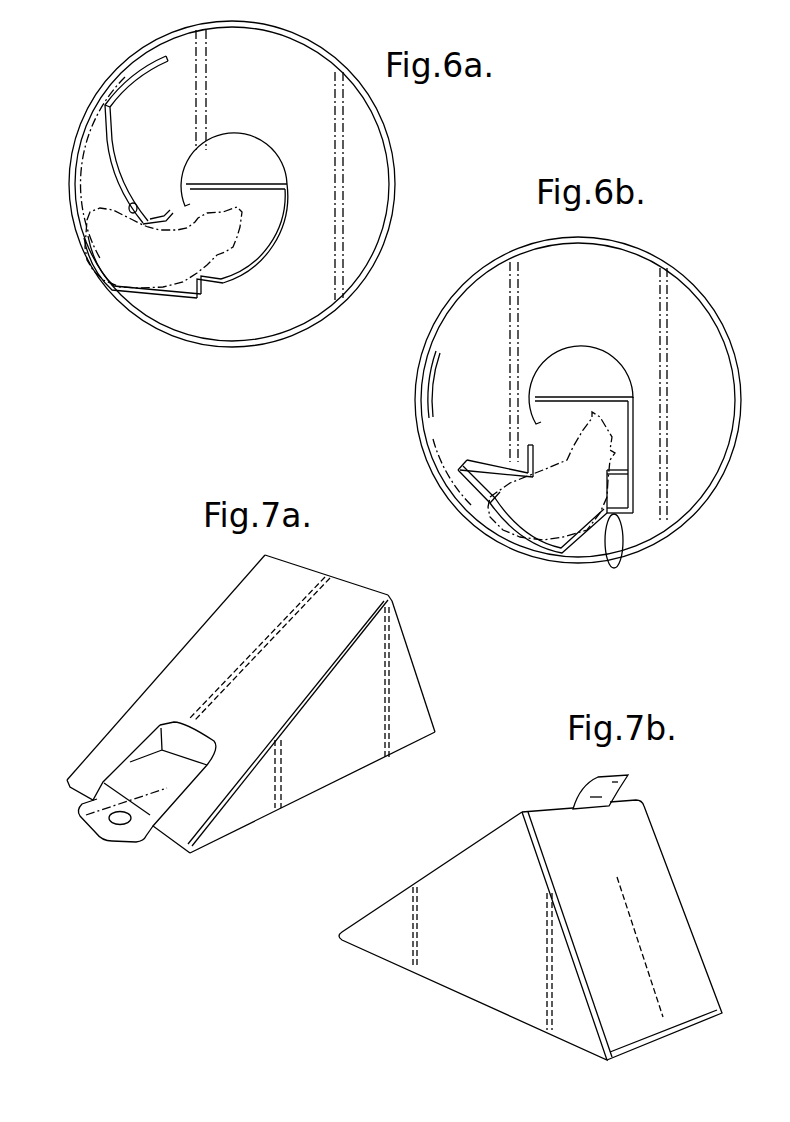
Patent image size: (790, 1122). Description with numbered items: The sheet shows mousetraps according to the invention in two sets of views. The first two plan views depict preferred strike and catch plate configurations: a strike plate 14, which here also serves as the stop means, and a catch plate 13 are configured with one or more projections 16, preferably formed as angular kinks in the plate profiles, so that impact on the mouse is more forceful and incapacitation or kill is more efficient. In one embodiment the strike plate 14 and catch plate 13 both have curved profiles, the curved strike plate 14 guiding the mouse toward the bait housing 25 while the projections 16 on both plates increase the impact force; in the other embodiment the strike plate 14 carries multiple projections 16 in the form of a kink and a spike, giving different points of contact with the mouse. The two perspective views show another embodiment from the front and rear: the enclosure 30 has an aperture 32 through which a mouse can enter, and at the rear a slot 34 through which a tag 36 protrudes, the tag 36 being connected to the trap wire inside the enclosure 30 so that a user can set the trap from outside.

In FIG. 6A, the catch plate 13 is at (260, 253).
In FIG. 6B, the catch plate 13 is at (637, 492).
In FIG. 6A, the strike plate 14 is at (107, 162).
In FIG. 6B, the strike plate 14 is at (490, 460).
In FIG. 6A, the projections 16 is at (134, 204).
In FIG. 6B, the projections 16 is at (488, 505).
In FIG. 6A, the bait housing 25 is at (267, 152).
In FIG. 6B, the bait housing 25 is at (587, 390).
In FIG. 7A, the enclosure 30 is at (413, 697).
In FIG. 7B, the enclosure 30 is at (457, 973).
In FIG. 7A, the aperture 32 is at (163, 787).
In FIG. 7B, the slot 34 is at (628, 782).
In FIG. 7B, the tag 36 is at (602, 812).